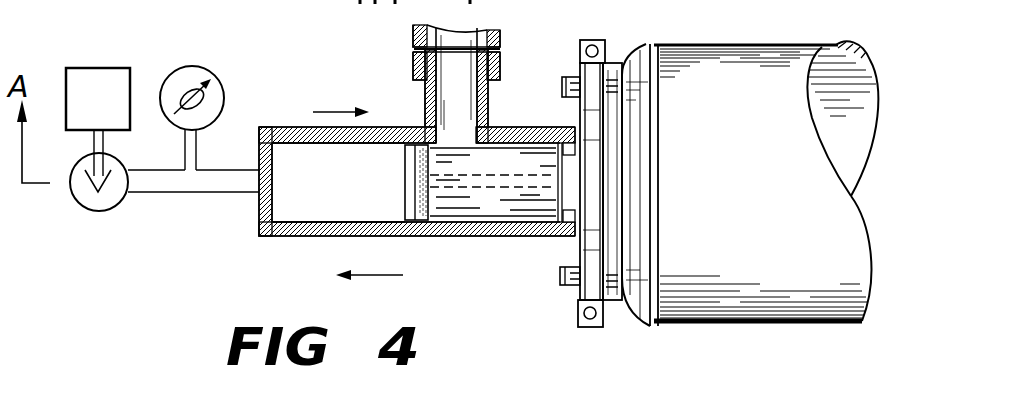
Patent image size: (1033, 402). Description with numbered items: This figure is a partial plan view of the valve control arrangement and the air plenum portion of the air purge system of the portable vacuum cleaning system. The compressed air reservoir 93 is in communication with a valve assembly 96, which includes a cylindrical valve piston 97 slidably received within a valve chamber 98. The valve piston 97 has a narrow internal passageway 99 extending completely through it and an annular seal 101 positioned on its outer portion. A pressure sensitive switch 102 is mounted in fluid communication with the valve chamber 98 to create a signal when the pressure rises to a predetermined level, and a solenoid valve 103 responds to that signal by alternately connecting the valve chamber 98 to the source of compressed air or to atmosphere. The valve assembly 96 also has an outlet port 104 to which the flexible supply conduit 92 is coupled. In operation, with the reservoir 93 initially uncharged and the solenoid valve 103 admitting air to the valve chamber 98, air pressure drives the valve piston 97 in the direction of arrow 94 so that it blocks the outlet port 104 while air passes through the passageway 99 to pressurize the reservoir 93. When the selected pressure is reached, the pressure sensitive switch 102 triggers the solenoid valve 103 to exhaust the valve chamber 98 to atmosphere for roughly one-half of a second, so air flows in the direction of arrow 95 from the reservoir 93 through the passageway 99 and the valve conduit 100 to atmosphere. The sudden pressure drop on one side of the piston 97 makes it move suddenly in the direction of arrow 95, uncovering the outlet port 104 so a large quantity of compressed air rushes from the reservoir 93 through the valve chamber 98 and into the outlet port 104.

The flexible supply conduit 92 is at (505, 14).
The compressed air reservoir 93 is at (778, 286).
The arrow 94 is at (335, 107).
The arrow 95 is at (380, 275).
The valve assembly 96 is at (301, 72).
The valve piston 97 is at (490, 208).
The valve chamber 98 is at (338, 216).
The internal passageway 99 is at (512, 176).
The valve conduit 100 is at (168, 193).
The annular seal 101 is at (424, 238).
The pressure sensitive switch 102 is at (190, 67).
The solenoid valve 103 is at (90, 70).
The outlet port 104 is at (470, 108).